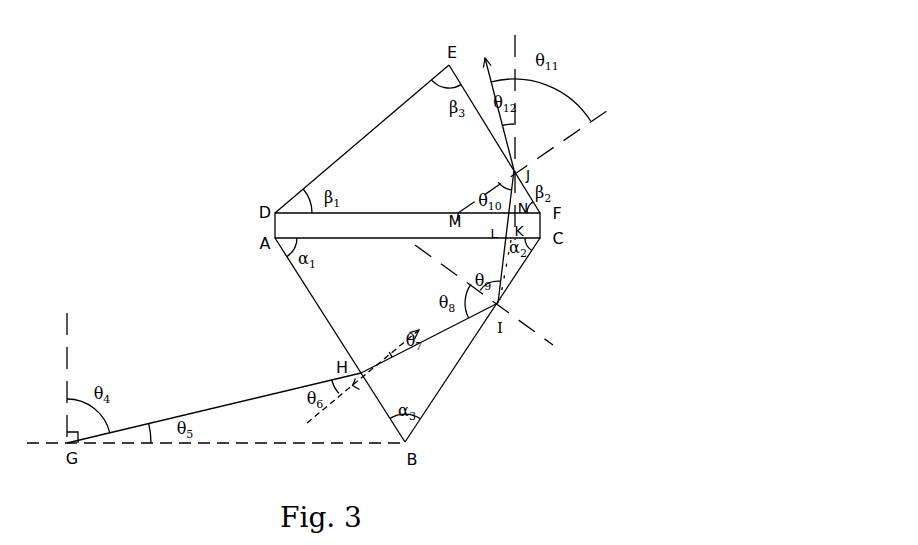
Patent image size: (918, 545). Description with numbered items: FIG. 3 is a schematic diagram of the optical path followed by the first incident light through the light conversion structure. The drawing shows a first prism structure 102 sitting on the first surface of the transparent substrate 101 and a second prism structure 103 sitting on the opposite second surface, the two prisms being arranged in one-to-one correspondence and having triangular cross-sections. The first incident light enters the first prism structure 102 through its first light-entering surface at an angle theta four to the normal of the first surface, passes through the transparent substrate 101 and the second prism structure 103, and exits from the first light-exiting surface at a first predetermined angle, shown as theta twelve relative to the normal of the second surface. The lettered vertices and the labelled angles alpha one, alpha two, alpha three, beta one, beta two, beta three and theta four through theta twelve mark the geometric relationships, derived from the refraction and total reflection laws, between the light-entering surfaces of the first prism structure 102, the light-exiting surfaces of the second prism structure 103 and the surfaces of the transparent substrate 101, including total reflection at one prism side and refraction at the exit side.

The transparent substrate 101 is at (275, 225).
The first prism structure 102 is at (314, 300).
The second prism structure 103 is at (347, 150).